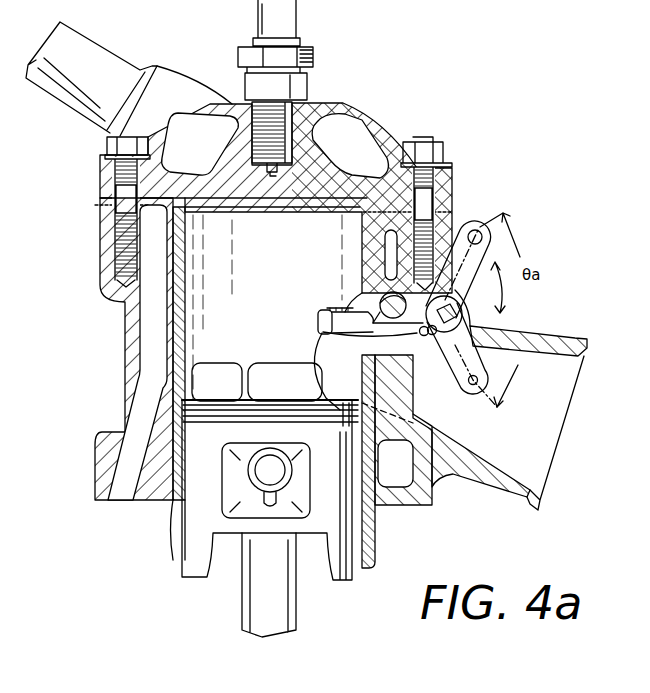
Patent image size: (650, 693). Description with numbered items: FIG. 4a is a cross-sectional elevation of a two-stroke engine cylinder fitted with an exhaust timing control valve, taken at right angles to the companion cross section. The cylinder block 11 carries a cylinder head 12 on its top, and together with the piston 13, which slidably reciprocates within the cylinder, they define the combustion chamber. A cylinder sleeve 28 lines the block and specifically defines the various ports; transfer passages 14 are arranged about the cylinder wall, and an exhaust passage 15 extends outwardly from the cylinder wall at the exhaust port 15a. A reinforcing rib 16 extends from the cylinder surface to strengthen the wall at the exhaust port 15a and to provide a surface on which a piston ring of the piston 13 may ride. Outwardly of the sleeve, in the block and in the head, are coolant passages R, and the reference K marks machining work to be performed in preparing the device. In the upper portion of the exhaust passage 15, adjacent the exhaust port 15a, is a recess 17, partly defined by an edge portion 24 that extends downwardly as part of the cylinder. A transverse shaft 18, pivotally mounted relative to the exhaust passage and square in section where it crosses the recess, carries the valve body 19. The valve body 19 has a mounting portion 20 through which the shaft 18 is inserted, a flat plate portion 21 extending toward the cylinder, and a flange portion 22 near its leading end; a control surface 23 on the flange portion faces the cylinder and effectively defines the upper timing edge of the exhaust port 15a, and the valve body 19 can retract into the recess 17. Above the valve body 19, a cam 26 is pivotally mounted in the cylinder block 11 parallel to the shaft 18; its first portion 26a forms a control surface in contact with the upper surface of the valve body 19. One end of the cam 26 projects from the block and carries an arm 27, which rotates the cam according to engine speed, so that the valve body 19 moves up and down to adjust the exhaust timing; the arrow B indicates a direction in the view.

The cylinder block 11 is at (113, 352).
The cylinder head 12 is at (354, 107).
The piston 13 is at (332, 578).
The transfer passages 14 is at (223, 372).
The exhaust passage 15 is at (537, 438).
The exhaust port 15a is at (325, 356).
The reinforcing rib 16 is at (413, 397).
The recess 17 is at (360, 300).
The transverse shaft 18 is at (466, 305).
The valve body 19 is at (433, 332).
The mounting portion 20 is at (465, 335).
The flat plate portion 21 is at (413, 321).
The flange portion 22 is at (330, 311).
The control surface 23 is at (322, 310).
The edge portion 24 is at (375, 315).
The cam 26 is at (385, 308).
The first portion of the cam 26a is at (390, 293).
The arm 27 is at (474, 229).
The cylinder sleeve 28 is at (186, 280).
The coolant passages R is at (201, 137).
The machining work K is at (318, 310).
The flow direction B is at (266, 325).